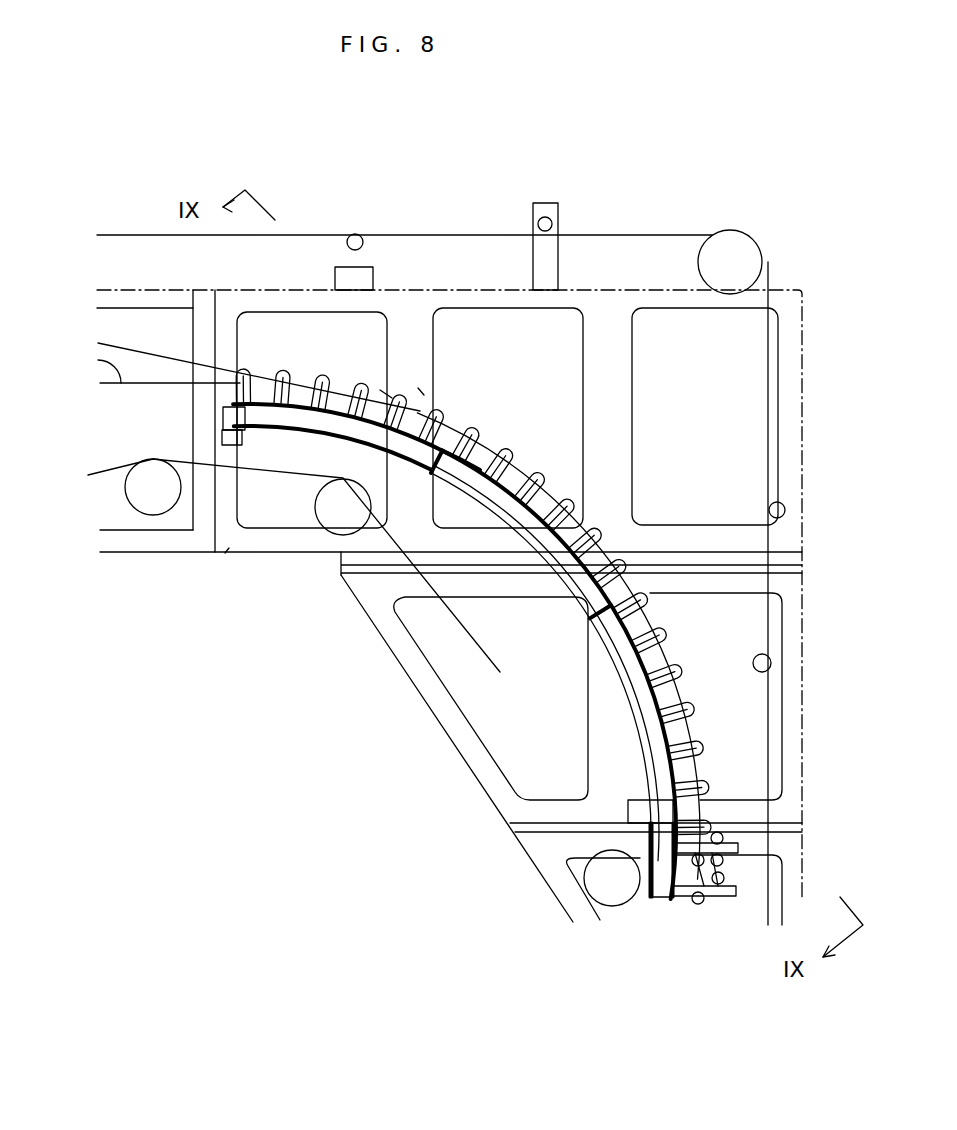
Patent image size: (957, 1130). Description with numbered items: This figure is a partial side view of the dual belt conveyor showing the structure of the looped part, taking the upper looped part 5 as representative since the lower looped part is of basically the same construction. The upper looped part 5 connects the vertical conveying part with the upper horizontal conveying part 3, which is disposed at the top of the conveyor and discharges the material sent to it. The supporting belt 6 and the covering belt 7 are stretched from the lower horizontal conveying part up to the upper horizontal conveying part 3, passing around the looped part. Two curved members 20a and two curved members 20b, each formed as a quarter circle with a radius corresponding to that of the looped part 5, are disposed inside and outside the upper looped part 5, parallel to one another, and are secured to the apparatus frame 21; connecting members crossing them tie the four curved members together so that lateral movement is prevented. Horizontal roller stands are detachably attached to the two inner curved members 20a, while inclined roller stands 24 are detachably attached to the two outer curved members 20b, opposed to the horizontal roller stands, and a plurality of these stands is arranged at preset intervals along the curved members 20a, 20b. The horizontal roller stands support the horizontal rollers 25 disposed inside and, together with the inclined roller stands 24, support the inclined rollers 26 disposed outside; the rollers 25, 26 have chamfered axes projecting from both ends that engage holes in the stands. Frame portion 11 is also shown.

The upper horizontal conveying part 3 is at (85, 545).
The upper looped part 5 is at (562, 480).
The supporting belt 6 is at (152, 367).
The covering belt 7 is at (138, 352).
The frame 11 is at (805, 847).
The apparatus frame 21 is at (230, 545).
The inclined roller stand 24 is at (450, 438).
The horizontal roller 25 is at (420, 387).
The inclined roller 26 is at (438, 405).
The curved member 20a is at (582, 596).
The curved member 20b is at (547, 663).